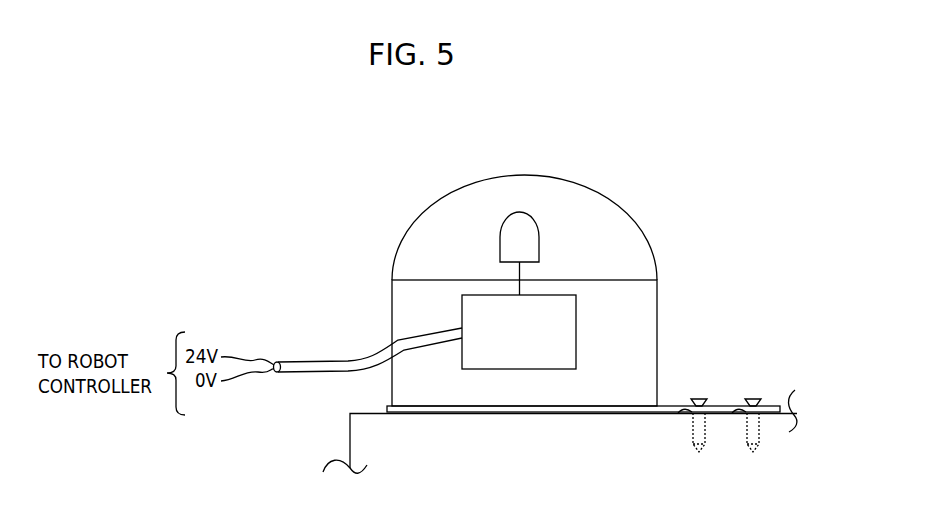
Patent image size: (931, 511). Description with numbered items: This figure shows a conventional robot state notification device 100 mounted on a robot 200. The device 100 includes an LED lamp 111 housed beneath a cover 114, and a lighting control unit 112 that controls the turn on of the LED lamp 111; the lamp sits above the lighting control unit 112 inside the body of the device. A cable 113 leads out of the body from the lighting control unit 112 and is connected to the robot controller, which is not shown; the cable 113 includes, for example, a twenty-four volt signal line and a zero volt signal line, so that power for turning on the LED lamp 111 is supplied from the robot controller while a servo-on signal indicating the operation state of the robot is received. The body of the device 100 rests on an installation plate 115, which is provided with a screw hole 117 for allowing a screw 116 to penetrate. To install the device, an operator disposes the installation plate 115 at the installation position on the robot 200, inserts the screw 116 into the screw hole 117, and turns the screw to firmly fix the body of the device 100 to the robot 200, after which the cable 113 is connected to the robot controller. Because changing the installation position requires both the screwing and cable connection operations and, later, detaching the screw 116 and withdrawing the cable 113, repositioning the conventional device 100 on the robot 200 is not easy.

The conventional robot state notification device 100 is at (266, 193).
The LED lamp 111 is at (534, 219).
The lighting control unit 112 is at (578, 333).
The cable 113 is at (323, 358).
The cover 114 is at (639, 223).
The installation plate 115 is at (665, 405).
The screw 116 is at (699, 398).
The screw hole 117 is at (734, 414).
The robot 200 is at (364, 412).